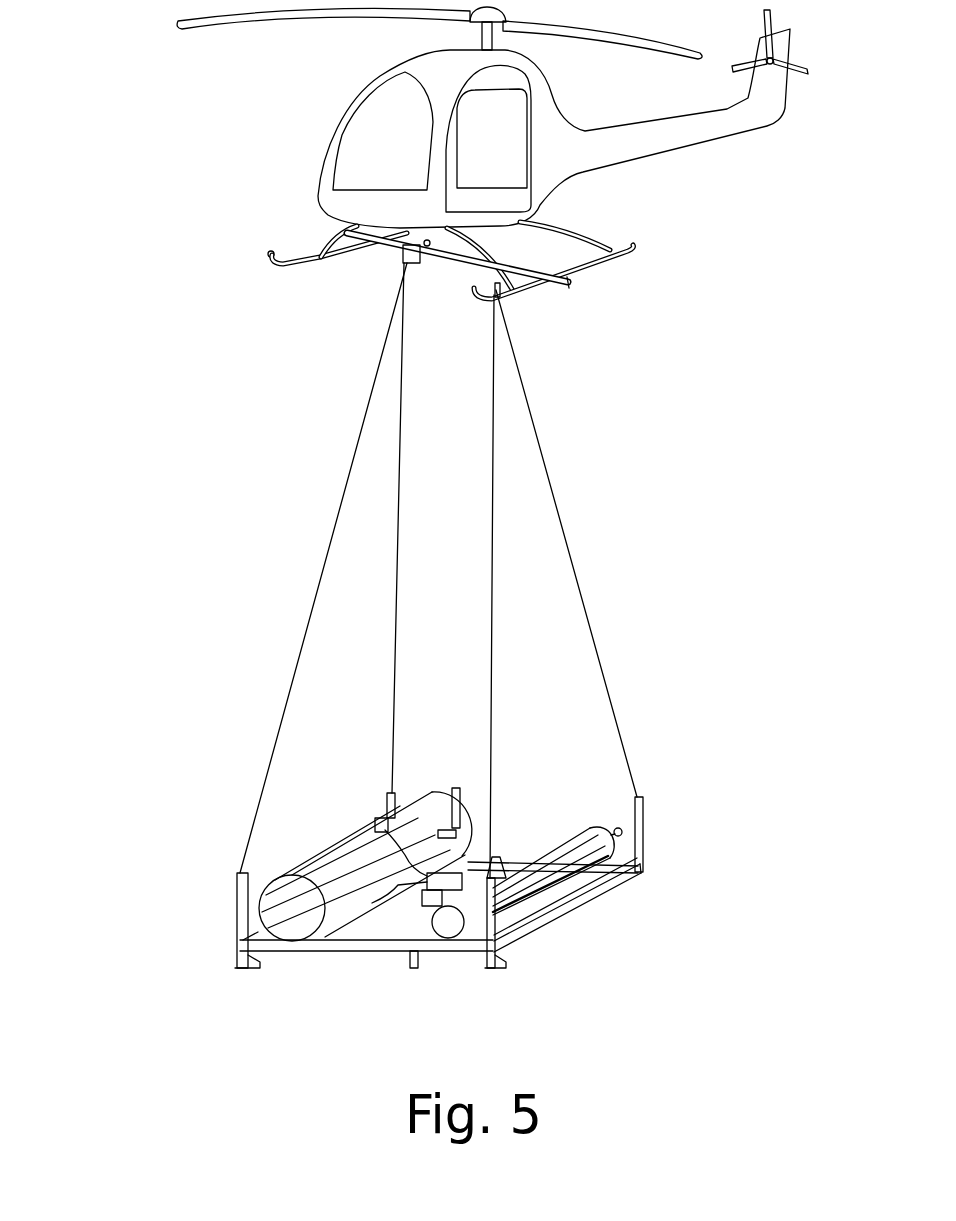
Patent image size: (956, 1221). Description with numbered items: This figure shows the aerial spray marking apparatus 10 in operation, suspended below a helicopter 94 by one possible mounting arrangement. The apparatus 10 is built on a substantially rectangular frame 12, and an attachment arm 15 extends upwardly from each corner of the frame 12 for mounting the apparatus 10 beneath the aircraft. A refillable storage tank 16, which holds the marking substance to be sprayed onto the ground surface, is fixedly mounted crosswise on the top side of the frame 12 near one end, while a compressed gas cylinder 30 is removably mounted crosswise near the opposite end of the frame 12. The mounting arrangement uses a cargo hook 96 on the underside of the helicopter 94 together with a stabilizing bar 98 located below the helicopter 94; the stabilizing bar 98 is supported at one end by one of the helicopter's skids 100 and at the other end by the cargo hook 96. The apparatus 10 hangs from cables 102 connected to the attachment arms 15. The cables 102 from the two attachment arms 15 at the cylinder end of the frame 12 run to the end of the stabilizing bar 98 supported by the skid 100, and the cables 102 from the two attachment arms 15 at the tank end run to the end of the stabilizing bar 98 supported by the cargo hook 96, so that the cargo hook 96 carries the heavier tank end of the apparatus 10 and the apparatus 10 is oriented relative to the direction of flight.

The helicopter 94 is at (633, 177).
The cargo hook 96 is at (393, 243).
The stabilizing bar 98 is at (462, 270).
The helicopter skid 100 is at (597, 280).
The cables 102 is at (388, 608).
The aerial spray marking apparatus 10 is at (697, 803).
The attachment arm 15 is at (647, 830).
The storage tank 16 is at (315, 843).
The frame 12 is at (558, 927).
The compressed gas cylinder 30 is at (445, 938).